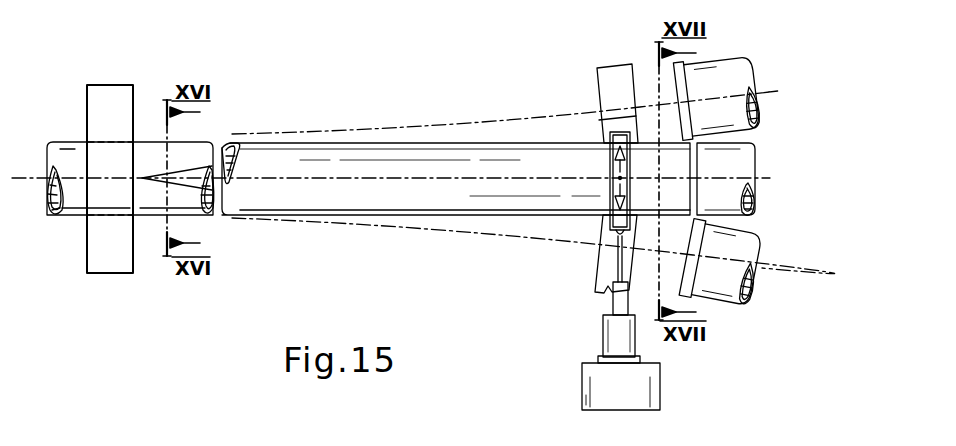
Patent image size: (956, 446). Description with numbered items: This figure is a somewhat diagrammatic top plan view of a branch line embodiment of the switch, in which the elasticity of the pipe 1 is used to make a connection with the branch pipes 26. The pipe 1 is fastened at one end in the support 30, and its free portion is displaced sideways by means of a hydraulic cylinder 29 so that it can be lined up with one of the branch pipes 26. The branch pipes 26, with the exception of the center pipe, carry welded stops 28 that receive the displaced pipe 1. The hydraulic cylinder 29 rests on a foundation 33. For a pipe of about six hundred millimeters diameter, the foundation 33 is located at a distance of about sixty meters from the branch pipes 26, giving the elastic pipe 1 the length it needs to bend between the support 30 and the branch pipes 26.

The pipe 1 is at (305, 207).
The support 30 is at (107, 265).
The branch pipes 26 is at (748, 128).
The welded stops 28 is at (693, 297).
The hydraulic cylinder 29 is at (613, 336).
The foundation 33 is at (597, 379).